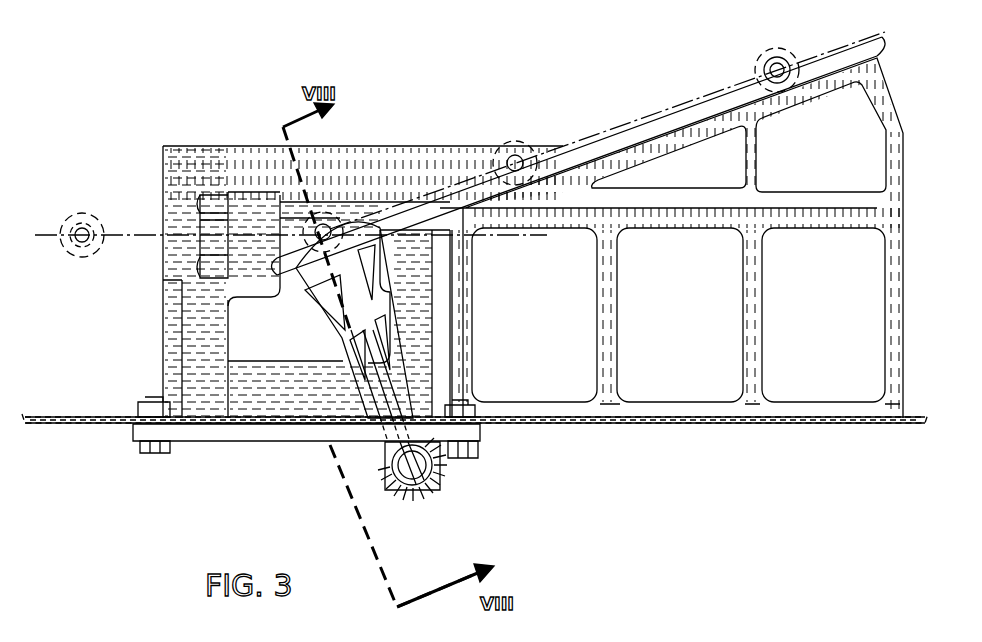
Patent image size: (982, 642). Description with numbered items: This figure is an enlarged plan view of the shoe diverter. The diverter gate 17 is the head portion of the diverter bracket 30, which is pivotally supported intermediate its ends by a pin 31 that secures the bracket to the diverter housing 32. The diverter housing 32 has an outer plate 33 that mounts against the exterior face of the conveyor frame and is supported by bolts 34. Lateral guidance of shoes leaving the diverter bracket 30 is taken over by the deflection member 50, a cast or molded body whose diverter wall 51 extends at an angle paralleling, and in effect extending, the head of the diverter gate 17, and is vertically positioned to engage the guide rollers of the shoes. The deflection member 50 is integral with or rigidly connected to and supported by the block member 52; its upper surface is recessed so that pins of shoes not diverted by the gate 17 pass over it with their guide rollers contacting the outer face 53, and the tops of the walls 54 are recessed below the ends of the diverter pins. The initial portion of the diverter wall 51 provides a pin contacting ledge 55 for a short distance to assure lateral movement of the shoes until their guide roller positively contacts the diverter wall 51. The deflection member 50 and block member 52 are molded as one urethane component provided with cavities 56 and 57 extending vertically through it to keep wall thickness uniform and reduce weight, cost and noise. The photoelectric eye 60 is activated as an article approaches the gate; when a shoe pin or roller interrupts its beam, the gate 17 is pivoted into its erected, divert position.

The diverter gate 17 is at (340, 214).
The diverter bracket 30 is at (296, 294).
The pin 31 is at (350, 410).
The diverter housing 32 is at (152, 343).
The outer plate 33 is at (240, 442).
The bolts 34 is at (155, 456).
The deflection member 50 is at (900, 80).
The diverter wall 51 is at (705, 108).
The block member 52 is at (742, 406).
The outer face 53 is at (674, 224).
The walls 54 is at (552, 222).
The ledge 55 is at (541, 150).
The cavities 56 is at (739, 137).
The cavities 57 is at (678, 315).
The photoelectric eye 60 is at (218, 198).